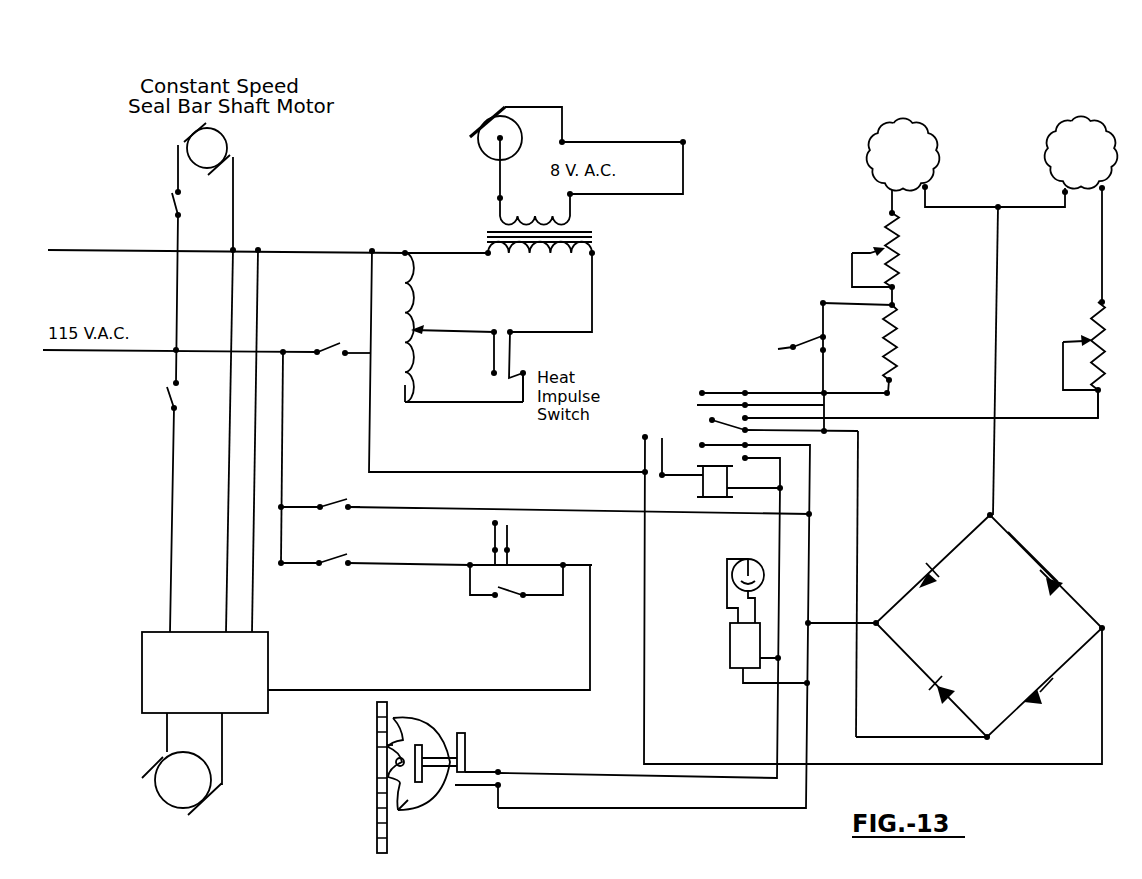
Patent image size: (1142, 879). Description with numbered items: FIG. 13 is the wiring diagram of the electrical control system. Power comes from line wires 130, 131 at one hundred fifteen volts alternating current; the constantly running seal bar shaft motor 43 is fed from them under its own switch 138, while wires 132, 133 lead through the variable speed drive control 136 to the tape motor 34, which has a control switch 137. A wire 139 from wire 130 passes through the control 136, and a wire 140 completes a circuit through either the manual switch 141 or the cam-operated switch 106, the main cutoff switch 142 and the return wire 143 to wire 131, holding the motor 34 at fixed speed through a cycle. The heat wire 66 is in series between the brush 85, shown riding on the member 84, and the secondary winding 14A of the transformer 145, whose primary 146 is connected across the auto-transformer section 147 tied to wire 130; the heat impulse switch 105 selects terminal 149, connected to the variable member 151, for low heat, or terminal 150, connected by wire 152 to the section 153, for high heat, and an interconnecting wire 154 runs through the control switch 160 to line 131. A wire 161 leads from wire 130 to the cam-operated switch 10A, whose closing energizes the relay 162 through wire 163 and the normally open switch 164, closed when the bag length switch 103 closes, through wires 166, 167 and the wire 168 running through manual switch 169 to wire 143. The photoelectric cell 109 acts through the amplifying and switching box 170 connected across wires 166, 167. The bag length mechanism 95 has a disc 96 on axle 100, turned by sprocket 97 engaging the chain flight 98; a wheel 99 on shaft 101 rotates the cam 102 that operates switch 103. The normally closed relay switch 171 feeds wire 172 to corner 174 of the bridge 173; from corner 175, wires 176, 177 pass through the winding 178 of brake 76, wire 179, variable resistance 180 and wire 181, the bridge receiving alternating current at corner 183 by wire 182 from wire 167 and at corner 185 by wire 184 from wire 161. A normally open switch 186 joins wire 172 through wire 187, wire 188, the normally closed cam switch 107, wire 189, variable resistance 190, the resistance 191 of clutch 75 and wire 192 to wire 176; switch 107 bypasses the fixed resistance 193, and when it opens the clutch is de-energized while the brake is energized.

The motor 43 is at (227, 149).
The switch 138 is at (170, 206).
The wire 133 is at (167, 513).
The motor control switch 137 is at (153, 397).
The wire 132 is at (224, 470).
The wire 139 is at (263, 313).
The wire 130 is at (58, 243).
The wire 131 is at (62, 353).
The control switch 160 is at (335, 347).
The interconnecting wire 154 is at (362, 360).
The wire 143 is at (285, 455).
The manual switch 169 is at (335, 513).
The wire 168 is at (592, 512).
The main cutoff switch 142 is at (335, 567).
The variable speed drive control 136 is at (143, 669).
The wire 140 is at (332, 687).
The motor 34 is at (170, 792).
The timer cam 84 is at (483, 147).
The brush 85 is at (477, 127).
The heat wire 66 is at (615, 140).
The transformer primary winding 14A is at (542, 203).
The transformer 145 is at (603, 243).
The primary winding 146 is at (543, 257).
The auto-transformer winding section 147 is at (415, 307).
The variable member 151 is at (442, 323).
The terminal 149 is at (483, 375).
The terminal 150 is at (506, 367).
The switch 105 is at (512, 352).
The wire 152 is at (448, 410).
The transformer section 153 is at (413, 387).
The wire 161 is at (460, 468).
The conductor 10A is at (650, 453).
The switch 106 is at (492, 545).
The manually controlled switch 141 is at (516, 593).
The wire 188 is at (762, 390).
The third switch 186 is at (708, 406).
The wire 187 is at (832, 409).
The switch 171 is at (713, 427).
The wire 172 is at (860, 492).
The wire 167 is at (812, 553).
The switch 164 is at (710, 452).
The wire 166 is at (778, 545).
The relay 162 is at (701, 484).
The wire 163 is at (748, 488).
The photoelectric cell 109 is at (733, 575).
The amplifying and switching box 170 is at (730, 643).
The wire 182 is at (832, 622).
The corner 175 is at (1007, 513).
The bridge 173 is at (1038, 558).
The corner 183 is at (887, 622).
The corner 185 is at (1090, 627).
The corner 174 is at (997, 738).
The wire 184 is at (943, 762).
The wire 176 is at (998, 467).
The clutch 75 is at (897, 116).
The resistance 191 is at (862, 167).
The wire 192 is at (961, 212).
The wire 177 is at (1010, 208).
The brake 76 is at (1092, 125).
The winding 178 is at (1045, 147).
The wire 179 is at (1095, 277).
The variable resistance 180 is at (1093, 322).
The wire 181 is at (1050, 420).
The variable resistance 190 is at (897, 268).
The wire 189 is at (842, 302).
The fixed resistance 193 is at (895, 347).
The switch 107 is at (808, 343).
The flight 98 is at (377, 817).
The sprocket 97 is at (377, 752).
The axle 100 is at (396, 763).
The disc 96 is at (413, 730).
The bag length determining mechanism 95 is at (419, 806).
The shaft 101 is at (435, 763).
The cam 102 is at (466, 735).
The switch 103 is at (483, 772).
The wheel 99 is at (410, 810).